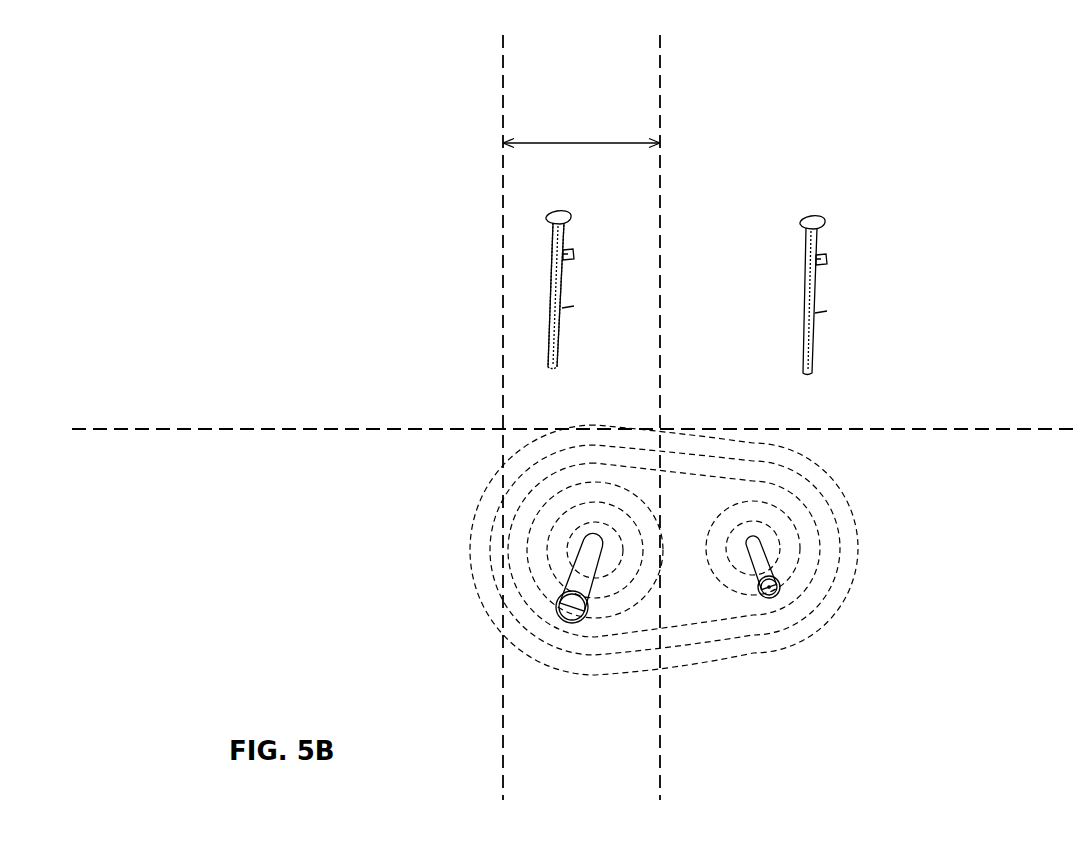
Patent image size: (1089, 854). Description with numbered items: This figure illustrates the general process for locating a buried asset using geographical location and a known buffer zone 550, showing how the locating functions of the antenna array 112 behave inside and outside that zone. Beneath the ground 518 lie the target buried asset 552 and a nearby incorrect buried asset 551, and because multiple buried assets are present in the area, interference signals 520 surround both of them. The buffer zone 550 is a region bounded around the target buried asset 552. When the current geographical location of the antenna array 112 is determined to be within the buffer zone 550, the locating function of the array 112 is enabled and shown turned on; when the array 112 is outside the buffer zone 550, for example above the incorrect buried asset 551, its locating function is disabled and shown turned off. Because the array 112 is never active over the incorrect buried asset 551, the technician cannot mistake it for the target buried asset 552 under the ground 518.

The buffer zone 550 is at (578, 140).
The antenna array 112 is at (571, 287).
The ground 518 is at (993, 429).
The interference signals 520 is at (858, 530).
The target buried asset 552 is at (588, 557).
The incorrect buried asset 551 is at (777, 580).